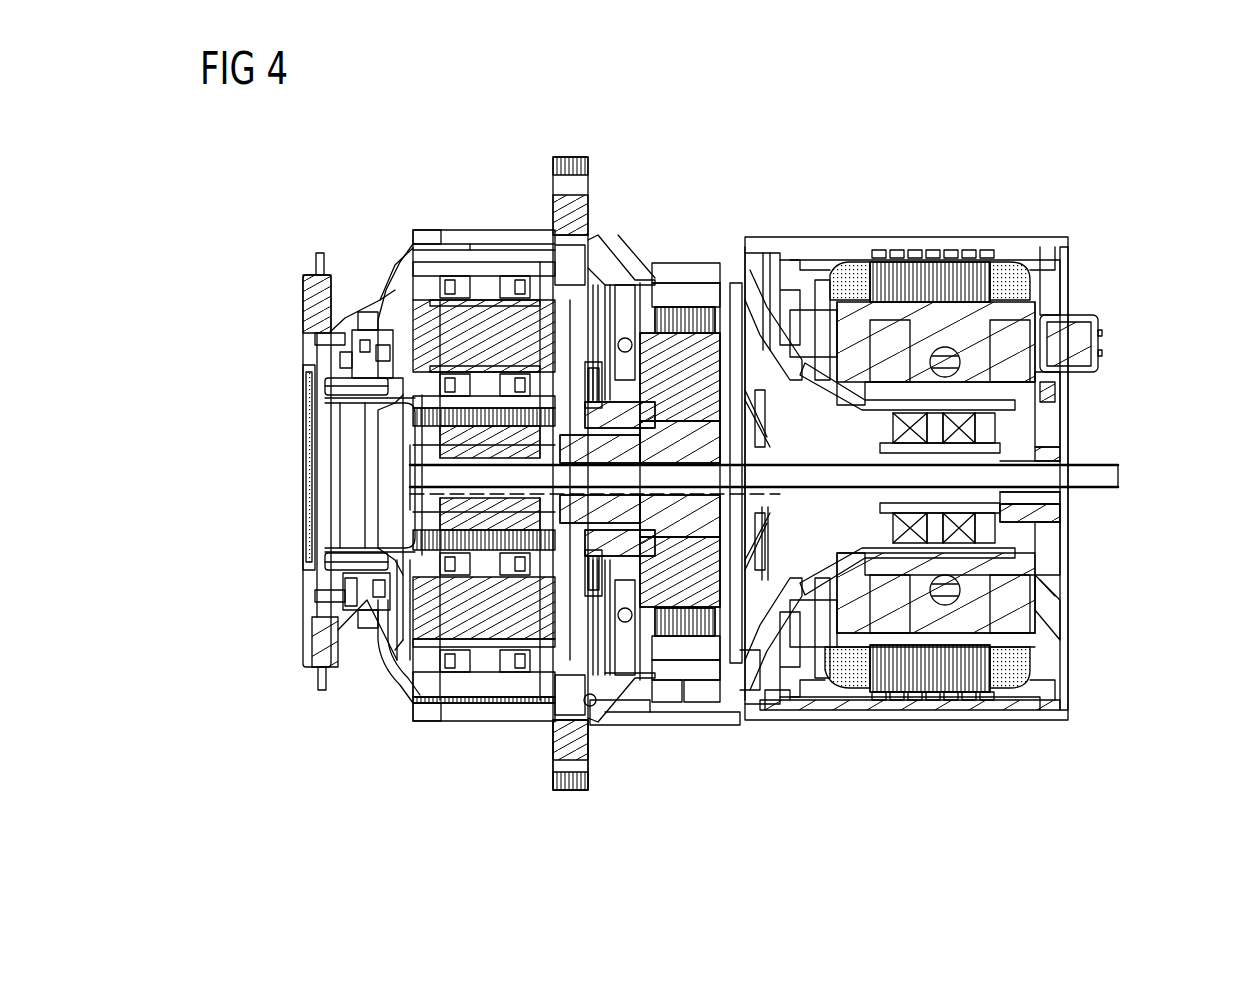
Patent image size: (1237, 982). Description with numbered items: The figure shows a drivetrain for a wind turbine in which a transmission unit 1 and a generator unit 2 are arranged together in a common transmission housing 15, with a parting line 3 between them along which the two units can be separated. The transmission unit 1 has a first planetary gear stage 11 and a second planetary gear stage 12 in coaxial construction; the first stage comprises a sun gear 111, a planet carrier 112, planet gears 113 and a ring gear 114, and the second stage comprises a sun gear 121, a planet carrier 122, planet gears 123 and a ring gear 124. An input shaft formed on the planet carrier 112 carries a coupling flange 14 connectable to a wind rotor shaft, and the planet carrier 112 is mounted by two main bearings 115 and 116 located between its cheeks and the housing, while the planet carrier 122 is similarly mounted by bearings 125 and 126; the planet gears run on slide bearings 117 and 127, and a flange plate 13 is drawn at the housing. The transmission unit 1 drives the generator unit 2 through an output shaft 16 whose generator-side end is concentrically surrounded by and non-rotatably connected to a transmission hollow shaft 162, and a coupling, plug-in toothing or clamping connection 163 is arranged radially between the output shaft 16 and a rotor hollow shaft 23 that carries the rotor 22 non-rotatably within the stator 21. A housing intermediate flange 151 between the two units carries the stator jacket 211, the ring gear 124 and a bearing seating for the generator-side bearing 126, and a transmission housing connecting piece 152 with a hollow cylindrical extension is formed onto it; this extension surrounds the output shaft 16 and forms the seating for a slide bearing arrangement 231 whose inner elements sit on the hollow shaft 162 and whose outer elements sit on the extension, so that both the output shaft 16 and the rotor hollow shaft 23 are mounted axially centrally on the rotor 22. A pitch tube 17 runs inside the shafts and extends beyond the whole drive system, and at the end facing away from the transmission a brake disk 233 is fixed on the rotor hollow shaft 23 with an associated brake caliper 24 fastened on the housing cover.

The transmission unit 1 is at (604, 116).
The generator unit 2 is at (1150, 168).
The parting line 3 is at (778, 237).
The first planetary gear stage 11 is at (543, 116).
The second planetary gear stage 12 is at (670, 802).
The flange plate 13 is at (590, 740).
The coupling flange 14 is at (312, 311).
The transmission housing 15 is at (405, 700).
The output shaft 16 is at (1062, 494).
The pitch tube 17 is at (1100, 466).
The stator 21 is at (890, 252).
The rotor 22 is at (1010, 300).
The rotor hollow shaft 23 is at (1062, 565).
The brake caliper 24 is at (1065, 333).
The sun gear 111 is at (470, 330).
The planet carrier 112 is at (407, 300).
The planet gears 113 is at (478, 700).
The ring gear 114 is at (526, 700).
The bearing 115 is at (382, 340).
The bearing 116 is at (606, 300).
The bearings 117 is at (545, 330).
The sun gear 121 is at (668, 420).
The planet carrier 122 is at (715, 300).
The planet gears 123 is at (668, 300).
The ring gear 124 is at (690, 688).
The bearing 125 is at (665, 688).
The bearing 126 is at (758, 700).
The bearings 127 is at (696, 290).
The housing intermediate flange 151 is at (753, 260).
The transmission housing connecting piece 152 is at (848, 310).
The transmission hollow shaft 162 is at (1062, 510).
The coupling, plug-in toothing or clamping connection 163 is at (1060, 540).
The stator jacket 211 is at (830, 708).
The bearing arrangement 231 is at (948, 262).
The brake disk 233 is at (1060, 375).